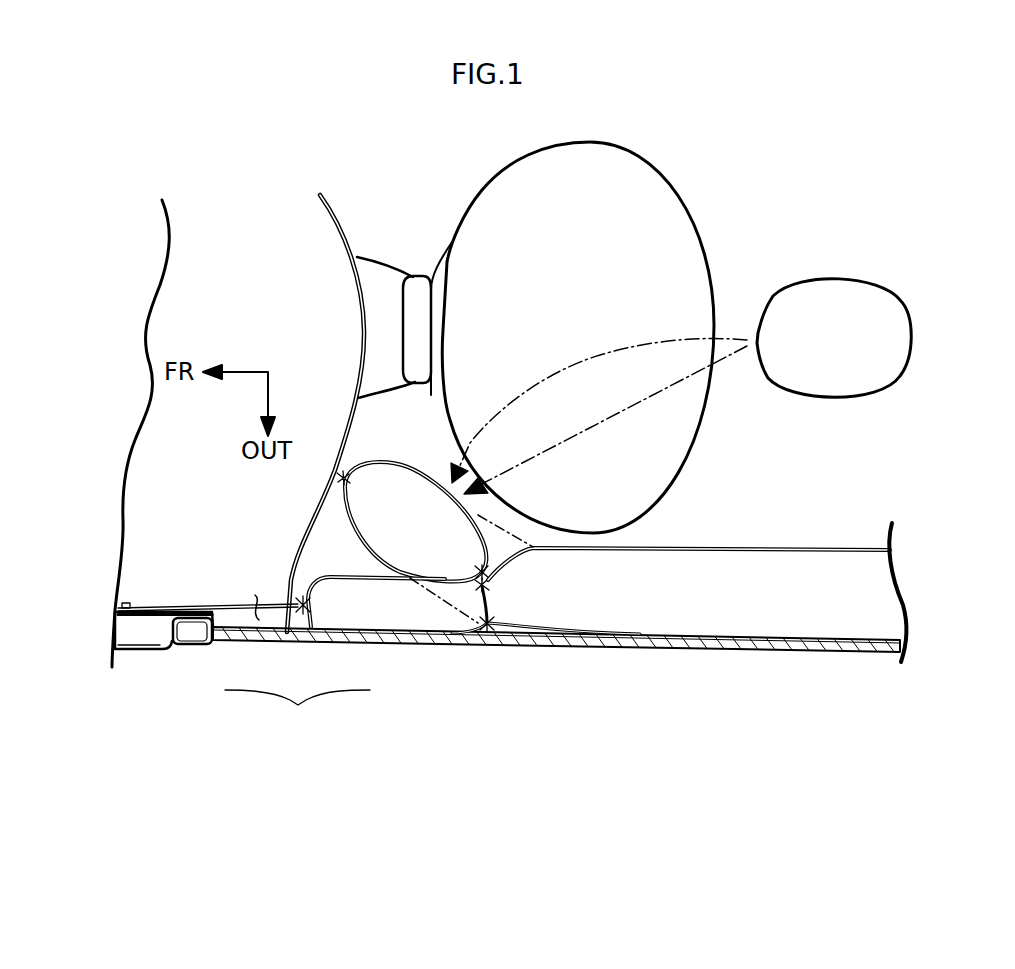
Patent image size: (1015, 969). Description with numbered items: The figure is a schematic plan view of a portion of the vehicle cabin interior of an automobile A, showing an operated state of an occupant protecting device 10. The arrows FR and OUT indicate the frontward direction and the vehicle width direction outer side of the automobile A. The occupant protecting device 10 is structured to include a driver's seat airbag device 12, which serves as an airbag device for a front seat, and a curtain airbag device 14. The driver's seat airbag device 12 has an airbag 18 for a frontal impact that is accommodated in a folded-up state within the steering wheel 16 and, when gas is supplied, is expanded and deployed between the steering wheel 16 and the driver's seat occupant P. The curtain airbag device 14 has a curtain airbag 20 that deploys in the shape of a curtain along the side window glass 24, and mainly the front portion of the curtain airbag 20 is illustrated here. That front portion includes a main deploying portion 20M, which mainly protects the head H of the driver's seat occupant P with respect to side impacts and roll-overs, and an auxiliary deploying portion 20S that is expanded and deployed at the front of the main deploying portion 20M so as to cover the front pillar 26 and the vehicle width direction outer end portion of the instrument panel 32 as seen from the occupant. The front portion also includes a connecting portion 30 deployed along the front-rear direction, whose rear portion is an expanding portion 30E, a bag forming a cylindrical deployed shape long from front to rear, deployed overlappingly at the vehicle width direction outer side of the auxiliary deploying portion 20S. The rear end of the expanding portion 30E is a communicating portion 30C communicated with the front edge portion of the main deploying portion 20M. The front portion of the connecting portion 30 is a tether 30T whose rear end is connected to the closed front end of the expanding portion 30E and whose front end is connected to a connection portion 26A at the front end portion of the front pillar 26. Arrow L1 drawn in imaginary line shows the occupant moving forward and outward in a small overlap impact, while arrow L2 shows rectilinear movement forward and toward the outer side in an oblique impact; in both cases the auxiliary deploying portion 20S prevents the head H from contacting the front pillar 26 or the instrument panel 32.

The occupant protecting device 10 is at (875, 222).
The driver's seat airbag device 12 is at (697, 208).
The curtain airbag device 14 is at (796, 540).
The steering wheel 16 is at (437, 272).
The airbag for a frontal impact 18 is at (666, 173).
The curtain airbag 20 is at (843, 548).
The auxiliary deploying portion 20S is at (413, 500).
The main deploying portion 20M is at (708, 572).
The side window glass 24 is at (685, 646).
The front pillar 26 is at (140, 652).
The connection portion 26A is at (133, 602).
The connecting portion 30 is at (297, 714).
The tether 30T is at (225, 615).
The expanding portion 30E is at (332, 608).
The communicating portion 30C is at (490, 622).
The instrument panel 32 is at (322, 247).
The arrow L1 is at (573, 360).
The arrow L2 is at (592, 430).
The head H is at (866, 292).
The driver's seat occupant P is at (916, 335).
The automobile A is at (770, 657).